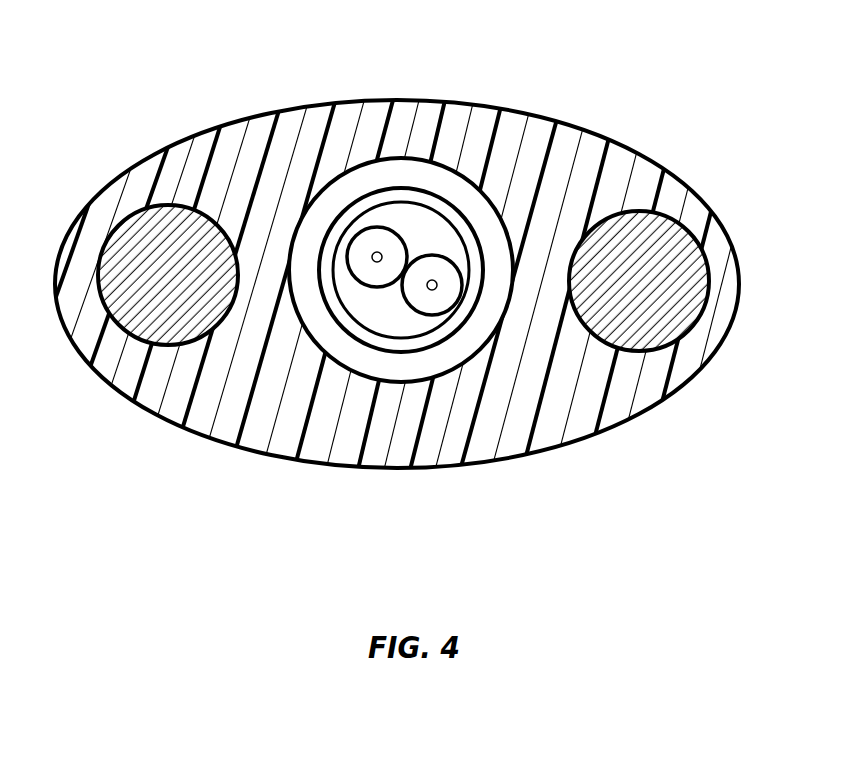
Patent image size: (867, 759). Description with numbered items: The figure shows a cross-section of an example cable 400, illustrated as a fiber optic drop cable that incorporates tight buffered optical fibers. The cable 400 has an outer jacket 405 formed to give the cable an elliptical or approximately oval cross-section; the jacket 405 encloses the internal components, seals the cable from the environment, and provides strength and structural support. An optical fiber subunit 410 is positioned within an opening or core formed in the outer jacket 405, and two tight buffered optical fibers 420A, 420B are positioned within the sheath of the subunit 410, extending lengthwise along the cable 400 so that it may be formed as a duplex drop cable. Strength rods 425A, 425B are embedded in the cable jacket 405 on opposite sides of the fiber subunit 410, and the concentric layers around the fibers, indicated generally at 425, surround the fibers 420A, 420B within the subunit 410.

The cable 400 is at (409, 282).
The outer jacket 405 is at (610, 168).
The optical fiber subunit 410 is at (401, 282).
The tight buffered optical fiber 420A is at (363, 290).
The tight buffered optical fiber 420B is at (410, 320).
The inner tube 425 is at (423, 358).
The strength rod 425A is at (100, 256).
The strength rod 425B is at (708, 254).